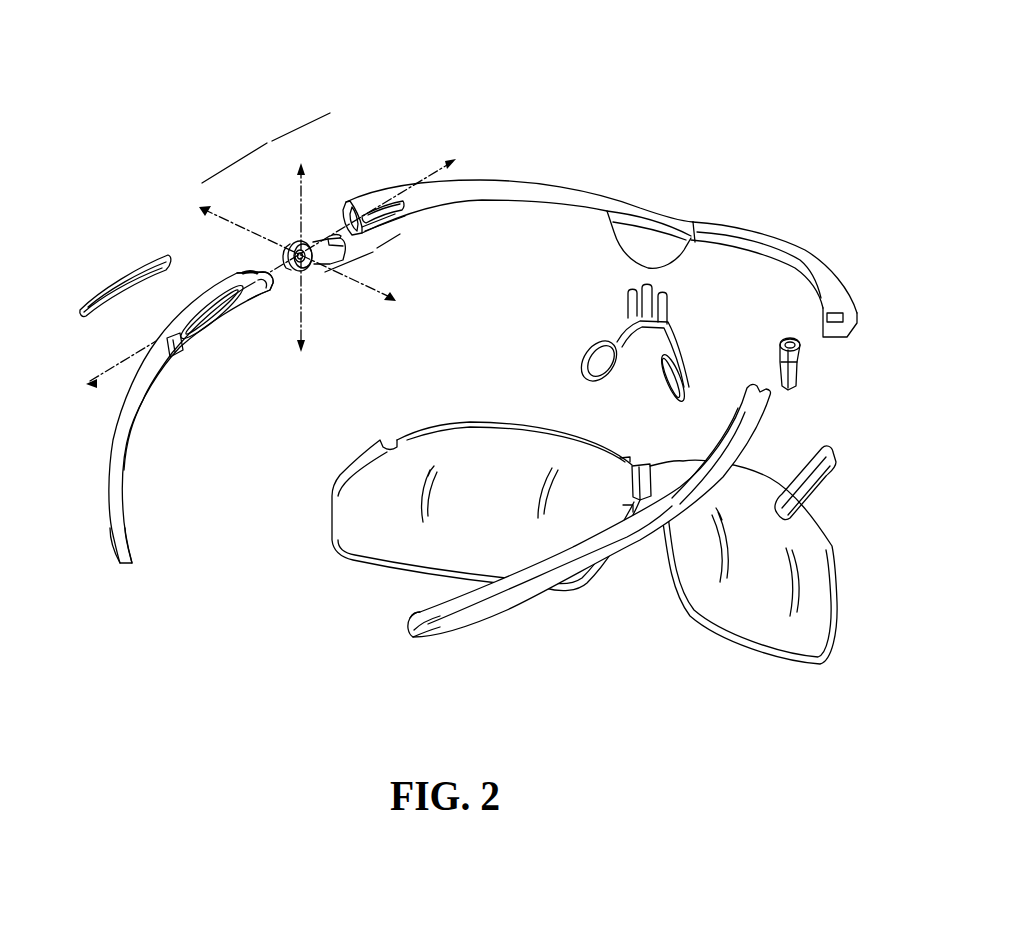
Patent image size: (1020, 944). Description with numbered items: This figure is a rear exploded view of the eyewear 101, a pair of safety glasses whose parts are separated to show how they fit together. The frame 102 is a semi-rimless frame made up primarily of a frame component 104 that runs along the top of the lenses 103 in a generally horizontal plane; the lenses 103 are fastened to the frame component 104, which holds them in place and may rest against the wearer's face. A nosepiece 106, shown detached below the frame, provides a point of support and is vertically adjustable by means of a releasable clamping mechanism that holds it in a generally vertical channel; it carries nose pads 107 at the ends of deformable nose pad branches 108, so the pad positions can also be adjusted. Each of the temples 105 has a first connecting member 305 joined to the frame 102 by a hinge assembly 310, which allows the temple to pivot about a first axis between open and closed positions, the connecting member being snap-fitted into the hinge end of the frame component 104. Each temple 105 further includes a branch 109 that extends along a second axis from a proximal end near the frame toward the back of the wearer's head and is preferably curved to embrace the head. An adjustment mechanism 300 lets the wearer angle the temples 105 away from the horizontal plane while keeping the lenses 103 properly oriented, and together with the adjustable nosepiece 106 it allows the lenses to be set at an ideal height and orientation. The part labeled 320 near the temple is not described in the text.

The eyewear 101 is at (710, 58).
The frame 102 is at (600, 233).
The lenses 103 is at (352, 528).
The frame component 104 is at (780, 241).
The temples 105 is at (130, 567).
The nosepiece 106 is at (632, 355).
The nose pads 107 is at (600, 372).
The nose pad branches 108 is at (620, 340).
The branch 109 is at (110, 480).
The adjustment mechanism 300 is at (266, 148).
The connecting member 305 is at (296, 249).
The hinge assembly 310 is at (369, 258).
The temple hinge portion 320 is at (259, 289).